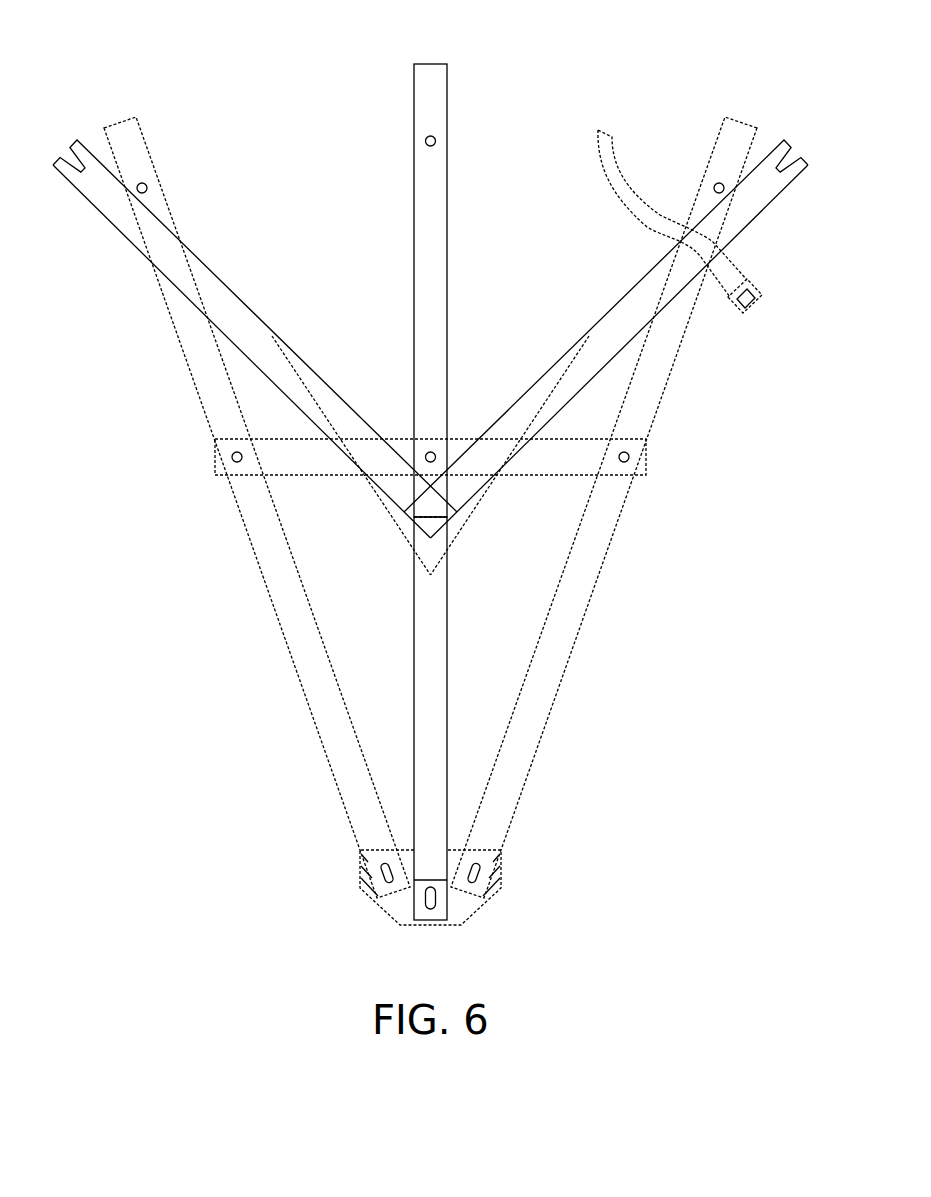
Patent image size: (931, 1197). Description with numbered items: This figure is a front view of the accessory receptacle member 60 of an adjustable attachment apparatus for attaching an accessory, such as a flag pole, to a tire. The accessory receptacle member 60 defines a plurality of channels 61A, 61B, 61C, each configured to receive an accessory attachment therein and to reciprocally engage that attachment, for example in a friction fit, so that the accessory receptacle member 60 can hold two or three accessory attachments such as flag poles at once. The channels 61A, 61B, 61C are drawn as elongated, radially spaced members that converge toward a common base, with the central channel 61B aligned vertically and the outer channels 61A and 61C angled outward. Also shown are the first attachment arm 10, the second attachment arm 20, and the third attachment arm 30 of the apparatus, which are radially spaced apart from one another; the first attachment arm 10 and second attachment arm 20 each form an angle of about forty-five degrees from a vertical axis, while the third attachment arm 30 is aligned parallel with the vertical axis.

The first attachment arm 10 is at (255, 357).
The second attachment arm 20 is at (606, 357).
The third attachment arm 30 is at (511, 718).
The accessory receptacle member 60 is at (377, 682).
The channel 61A is at (604, 507).
The channel 61B is at (464, 290).
The channel 61C is at (257, 507).